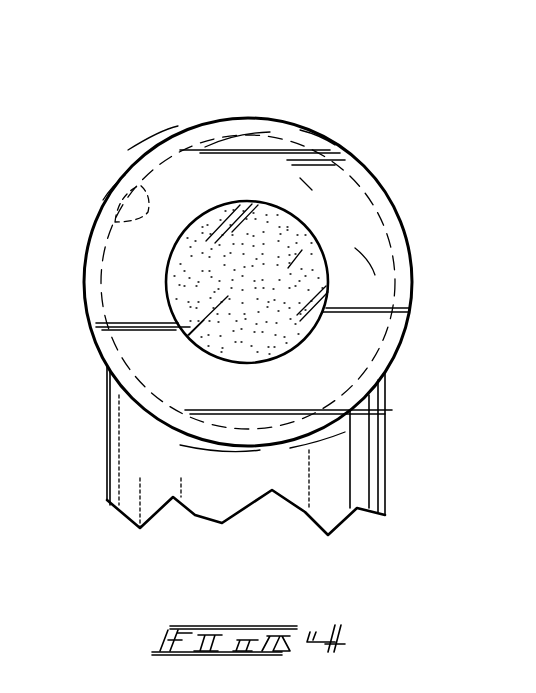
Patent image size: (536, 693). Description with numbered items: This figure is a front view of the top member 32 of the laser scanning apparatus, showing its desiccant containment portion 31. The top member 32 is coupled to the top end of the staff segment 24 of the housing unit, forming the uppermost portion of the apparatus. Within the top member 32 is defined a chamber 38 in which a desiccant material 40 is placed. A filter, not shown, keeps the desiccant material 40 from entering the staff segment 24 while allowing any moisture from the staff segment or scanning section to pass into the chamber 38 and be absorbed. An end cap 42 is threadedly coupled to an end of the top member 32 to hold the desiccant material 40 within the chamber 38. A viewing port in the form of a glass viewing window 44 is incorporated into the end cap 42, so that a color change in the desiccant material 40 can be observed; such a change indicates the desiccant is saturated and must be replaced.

The desiccant containment portion 31 is at (428, 170).
The top member 32 is at (278, 130).
The chamber 38 is at (120, 230).
The desiccant material 40 is at (297, 265).
The end cap 42 is at (365, 270).
The glass viewing window 44 is at (250, 342).
The staff segment 24 is at (355, 467).